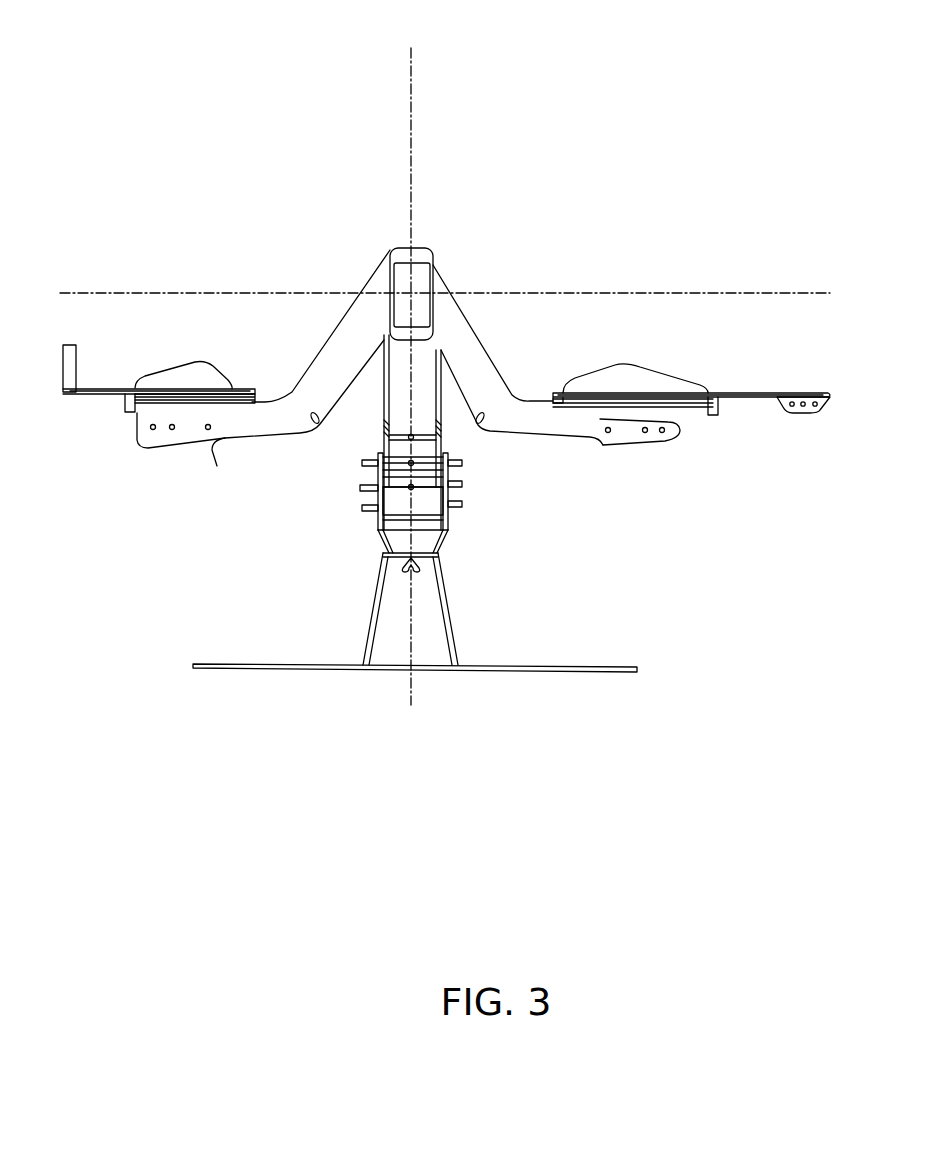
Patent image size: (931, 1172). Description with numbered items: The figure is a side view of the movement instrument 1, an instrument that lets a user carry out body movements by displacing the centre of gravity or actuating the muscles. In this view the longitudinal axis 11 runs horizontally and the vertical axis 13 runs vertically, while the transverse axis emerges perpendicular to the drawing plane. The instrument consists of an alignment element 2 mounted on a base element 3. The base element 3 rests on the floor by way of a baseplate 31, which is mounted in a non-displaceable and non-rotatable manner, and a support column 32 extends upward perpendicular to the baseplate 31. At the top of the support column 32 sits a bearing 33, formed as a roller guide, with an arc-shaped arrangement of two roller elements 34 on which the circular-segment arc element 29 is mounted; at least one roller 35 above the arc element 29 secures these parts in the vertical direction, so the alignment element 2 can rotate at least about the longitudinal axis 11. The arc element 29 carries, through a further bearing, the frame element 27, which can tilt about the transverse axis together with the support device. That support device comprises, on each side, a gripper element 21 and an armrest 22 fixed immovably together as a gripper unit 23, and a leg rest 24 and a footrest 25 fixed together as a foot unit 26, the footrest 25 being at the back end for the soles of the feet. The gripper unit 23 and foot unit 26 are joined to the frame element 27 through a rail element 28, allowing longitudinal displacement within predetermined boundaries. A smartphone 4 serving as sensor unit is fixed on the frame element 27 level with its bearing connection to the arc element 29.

The movement instrument 1 is at (158, 95).
The alignment element 2 is at (340, 162).
The base element 3 is at (300, 715).
The smartphone 4 is at (424, 285).
The longitudinal axis 11 is at (148, 293).
The vertical axis 13 is at (410, 72).
The gripper element 21 is at (70, 397).
The armrest 22 is at (160, 380).
The gripper unit 23 is at (159, 471).
The leg rest 24 is at (598, 378).
The footrest 25 is at (812, 393).
The foot unit 26 is at (691, 320).
The frame element 27 is at (317, 375).
The rail element 28 is at (213, 405).
The arc element 29 is at (385, 375).
The baseplate 31 is at (520, 670).
The support column 32 is at (397, 643).
The bearing 33 is at (460, 482).
The roller elements 34 is at (462, 503).
The roller 35 is at (447, 457).